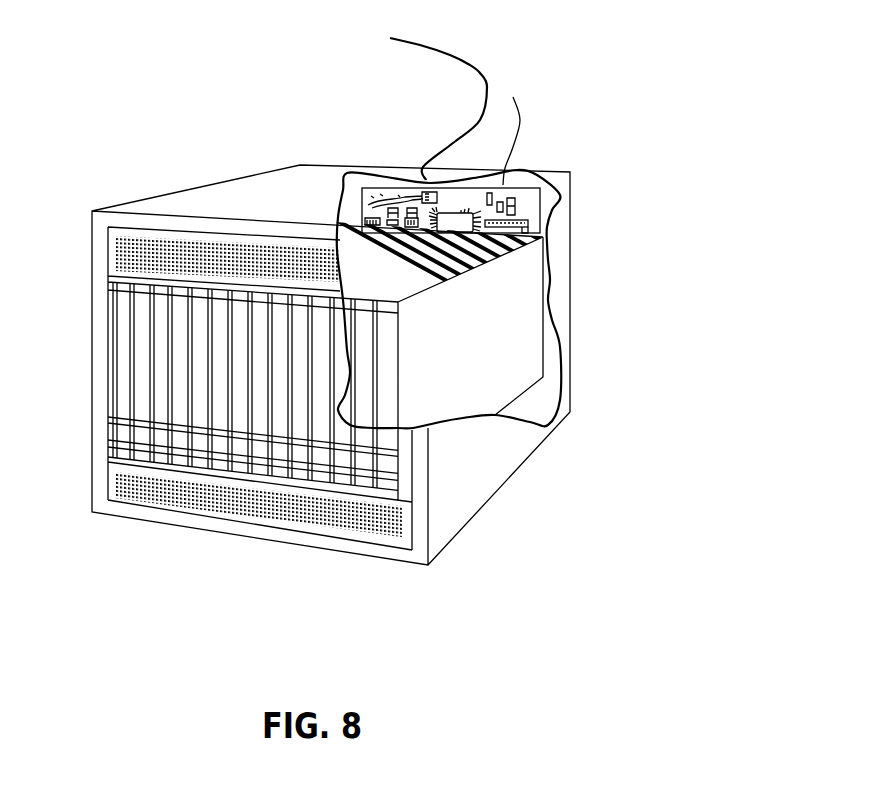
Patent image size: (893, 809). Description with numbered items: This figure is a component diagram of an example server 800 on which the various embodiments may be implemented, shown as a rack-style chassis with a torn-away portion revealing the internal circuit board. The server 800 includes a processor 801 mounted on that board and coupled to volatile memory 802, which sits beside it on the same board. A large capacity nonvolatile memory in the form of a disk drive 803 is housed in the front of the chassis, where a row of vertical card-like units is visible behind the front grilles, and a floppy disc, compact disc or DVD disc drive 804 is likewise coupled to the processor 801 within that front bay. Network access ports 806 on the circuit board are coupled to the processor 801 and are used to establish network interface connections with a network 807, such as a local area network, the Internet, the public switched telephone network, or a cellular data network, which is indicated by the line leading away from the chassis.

The server 800 is at (237, 175).
The processor 801 is at (458, 225).
The volatile memory 802 is at (523, 230).
The disk drive 803 is at (160, 337).
The disc drive 804 is at (140, 364).
The network access ports 806 is at (365, 220).
The network 807 is at (487, 82).